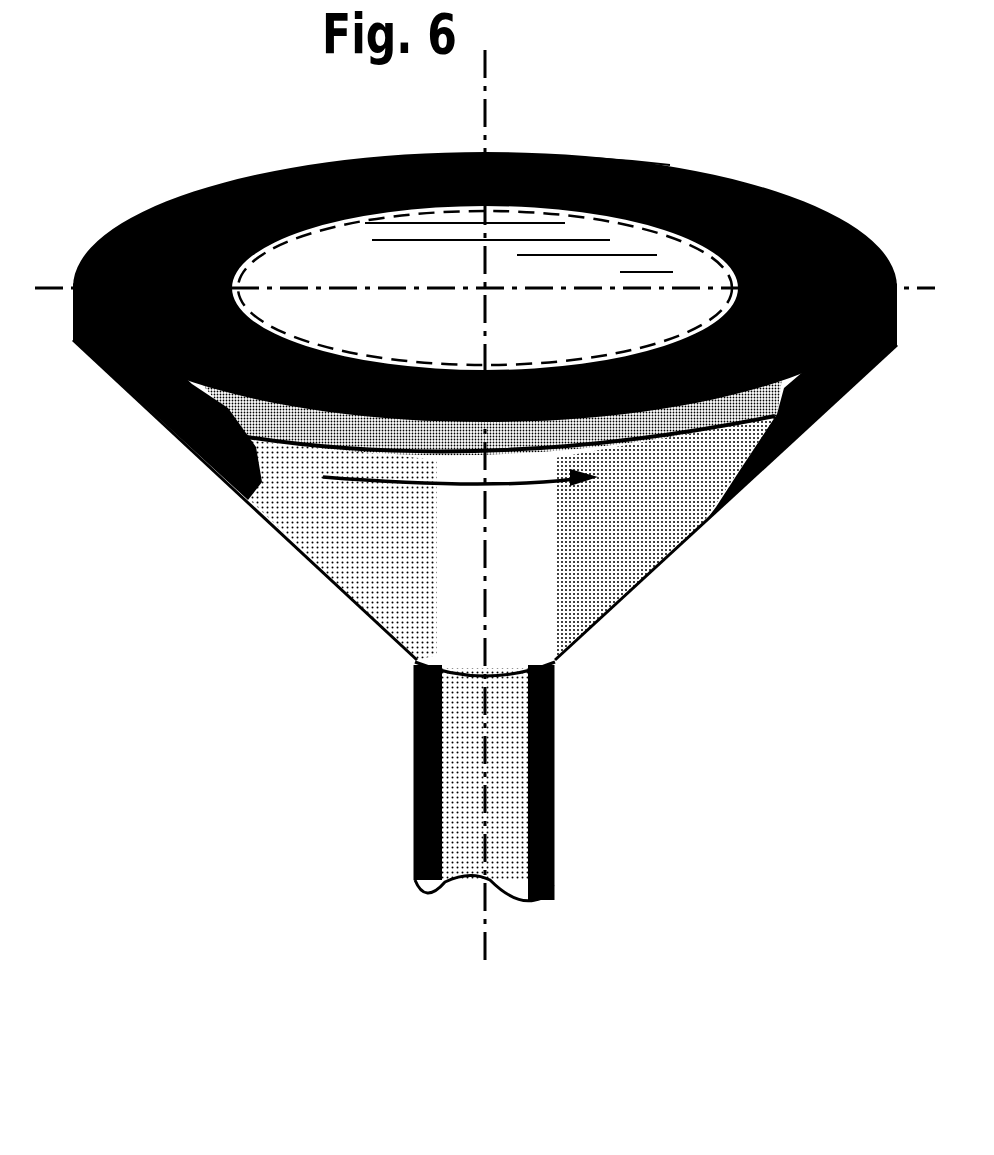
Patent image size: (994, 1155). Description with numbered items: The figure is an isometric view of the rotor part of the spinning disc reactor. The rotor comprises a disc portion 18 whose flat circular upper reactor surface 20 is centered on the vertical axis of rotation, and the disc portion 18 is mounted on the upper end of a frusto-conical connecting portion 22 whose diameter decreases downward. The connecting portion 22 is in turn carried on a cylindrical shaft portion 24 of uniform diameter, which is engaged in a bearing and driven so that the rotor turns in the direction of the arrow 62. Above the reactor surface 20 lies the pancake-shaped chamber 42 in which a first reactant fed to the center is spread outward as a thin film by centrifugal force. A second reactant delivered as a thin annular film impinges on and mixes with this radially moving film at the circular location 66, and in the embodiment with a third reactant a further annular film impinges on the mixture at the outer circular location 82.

The disc portion 18 is at (277, 427).
The reactor surface 20 is at (173, 198).
The frusto-conical connecting portion 22 is at (387, 510).
The cylindrical shaft portion 24 is at (463, 768).
The chamber 42 is at (500, 303).
The arrow 62 is at (460, 502).
The circular location 66 is at (640, 163).
The circular location 82 is at (712, 172).